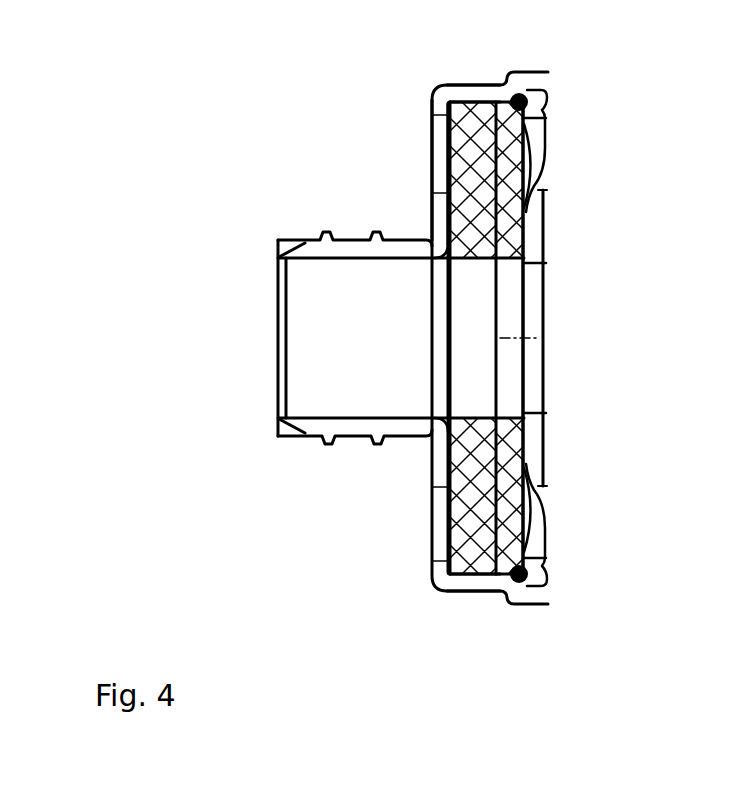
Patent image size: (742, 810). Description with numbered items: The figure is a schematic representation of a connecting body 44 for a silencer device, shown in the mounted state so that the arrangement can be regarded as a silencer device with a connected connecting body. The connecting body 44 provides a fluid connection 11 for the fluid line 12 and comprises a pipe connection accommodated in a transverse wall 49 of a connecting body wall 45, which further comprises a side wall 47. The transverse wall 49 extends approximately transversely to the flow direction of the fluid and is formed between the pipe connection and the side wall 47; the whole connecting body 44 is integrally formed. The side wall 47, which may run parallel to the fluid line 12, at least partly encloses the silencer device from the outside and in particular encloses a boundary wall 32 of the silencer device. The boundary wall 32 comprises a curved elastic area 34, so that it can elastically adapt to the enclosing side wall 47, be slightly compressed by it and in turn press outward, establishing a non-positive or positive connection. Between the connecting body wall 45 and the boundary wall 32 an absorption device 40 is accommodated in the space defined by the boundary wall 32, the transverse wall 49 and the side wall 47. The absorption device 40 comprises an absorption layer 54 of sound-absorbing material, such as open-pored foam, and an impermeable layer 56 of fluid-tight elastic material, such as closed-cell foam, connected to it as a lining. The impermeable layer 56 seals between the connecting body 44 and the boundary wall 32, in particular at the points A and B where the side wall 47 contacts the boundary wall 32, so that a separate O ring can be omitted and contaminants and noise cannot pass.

The fluid connection 11 is at (401, 334).
The fluid line 12 is at (548, 324).
The boundary wall 32 is at (548, 225).
The curved elastic area 34 is at (550, 525).
The absorption device 40 is at (484, 469).
The connecting body 44 is at (393, 442).
The connecting body wall 45 is at (430, 213).
The side wall 47 is at (478, 582).
The transverse wall 49 is at (433, 507).
The absorption layer 54 is at (436, 172).
The impermeable layer 56 is at (540, 170).
The point A is at (516, 582).
The point B is at (517, 94).